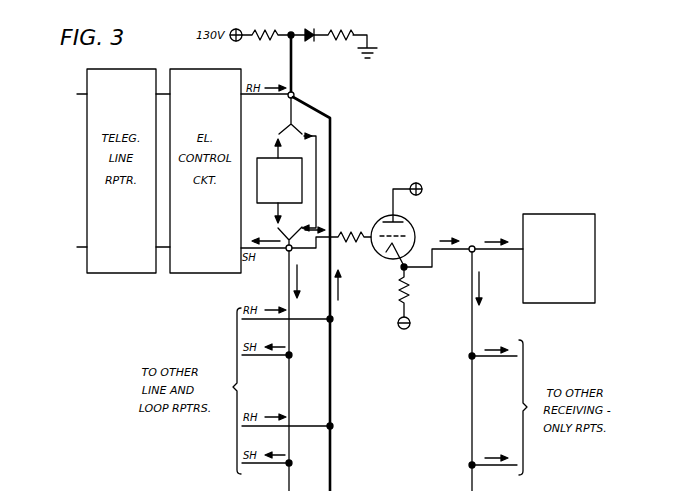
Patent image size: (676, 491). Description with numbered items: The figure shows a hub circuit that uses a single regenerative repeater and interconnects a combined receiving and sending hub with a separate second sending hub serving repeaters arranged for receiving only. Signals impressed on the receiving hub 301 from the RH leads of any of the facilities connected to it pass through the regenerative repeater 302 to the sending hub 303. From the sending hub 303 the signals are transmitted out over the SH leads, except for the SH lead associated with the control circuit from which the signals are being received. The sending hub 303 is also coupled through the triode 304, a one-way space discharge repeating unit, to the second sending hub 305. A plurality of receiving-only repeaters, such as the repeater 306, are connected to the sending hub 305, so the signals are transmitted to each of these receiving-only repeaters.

The receiving hub 301 is at (296, 93).
The regenerative repeater 302 is at (262, 153).
The sending hub 303 is at (292, 251).
The triode 304 is at (408, 222).
The sending hub 305 is at (473, 246).
The repeater 306 is at (557, 214).